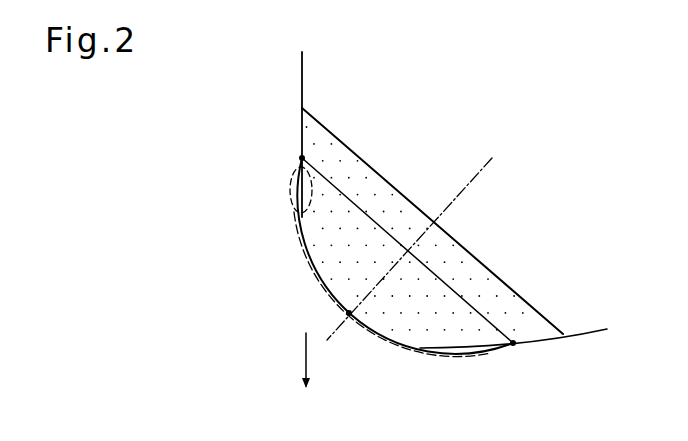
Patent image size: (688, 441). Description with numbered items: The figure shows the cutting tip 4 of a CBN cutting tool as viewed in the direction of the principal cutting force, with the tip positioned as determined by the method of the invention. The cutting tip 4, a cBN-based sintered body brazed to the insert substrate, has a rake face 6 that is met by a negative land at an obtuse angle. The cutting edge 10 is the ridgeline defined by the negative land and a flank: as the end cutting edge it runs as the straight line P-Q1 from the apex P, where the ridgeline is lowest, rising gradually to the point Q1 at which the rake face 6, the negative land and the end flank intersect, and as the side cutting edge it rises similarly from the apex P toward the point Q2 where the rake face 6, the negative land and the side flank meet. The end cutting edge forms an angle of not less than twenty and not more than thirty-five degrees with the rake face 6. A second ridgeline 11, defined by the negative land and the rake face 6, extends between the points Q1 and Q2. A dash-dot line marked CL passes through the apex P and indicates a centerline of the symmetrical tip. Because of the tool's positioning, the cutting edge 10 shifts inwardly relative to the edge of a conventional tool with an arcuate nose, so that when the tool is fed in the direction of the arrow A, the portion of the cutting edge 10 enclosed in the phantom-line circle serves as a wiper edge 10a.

The cutting tip 4 is at (492, 268).
The rake face 6 is at (533, 330).
The cutting edge 10 is at (404, 348).
The wiper edge 10a is at (290, 191).
The ridgeline 11 is at (357, 205).
The point Q1 is at (513, 343).
The point Q2 is at (301, 157).
The apex P is at (349, 313).
The center line CL is at (430, 230).
The arrow A is at (297, 367).